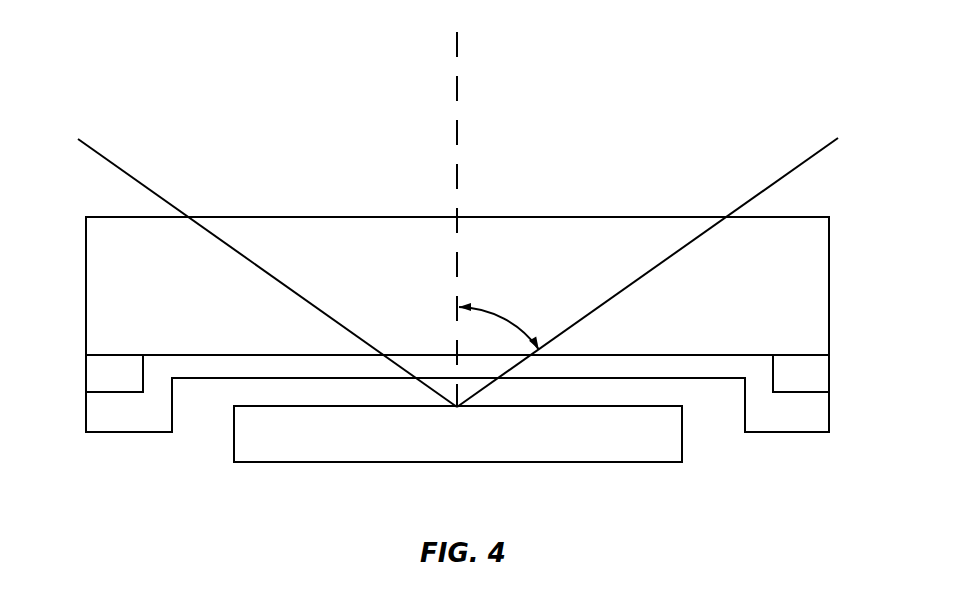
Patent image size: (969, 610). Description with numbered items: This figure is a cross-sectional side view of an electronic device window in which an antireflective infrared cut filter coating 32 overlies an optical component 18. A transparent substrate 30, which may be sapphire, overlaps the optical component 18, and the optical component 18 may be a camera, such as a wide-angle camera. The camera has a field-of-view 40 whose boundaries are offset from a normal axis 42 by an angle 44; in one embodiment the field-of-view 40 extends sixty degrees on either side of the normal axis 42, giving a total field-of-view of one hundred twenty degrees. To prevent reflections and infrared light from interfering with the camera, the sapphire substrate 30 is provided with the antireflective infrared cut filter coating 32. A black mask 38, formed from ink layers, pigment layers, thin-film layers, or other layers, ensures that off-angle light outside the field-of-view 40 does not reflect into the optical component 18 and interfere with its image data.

The optical component 18 is at (682, 443).
The transparent substrate 30 is at (818, 287).
The antireflective infrared cut filter coating 32 is at (817, 411).
The black mask 38 is at (98, 373).
The field-of-view 40 is at (110, 163).
The normal axis 42 is at (459, 43).
The angle 44 is at (511, 323).